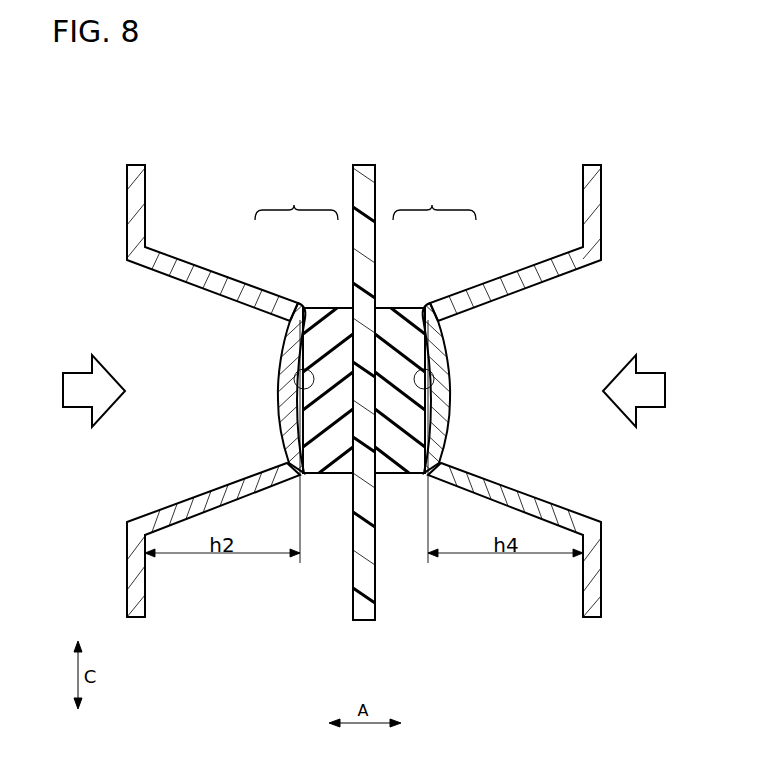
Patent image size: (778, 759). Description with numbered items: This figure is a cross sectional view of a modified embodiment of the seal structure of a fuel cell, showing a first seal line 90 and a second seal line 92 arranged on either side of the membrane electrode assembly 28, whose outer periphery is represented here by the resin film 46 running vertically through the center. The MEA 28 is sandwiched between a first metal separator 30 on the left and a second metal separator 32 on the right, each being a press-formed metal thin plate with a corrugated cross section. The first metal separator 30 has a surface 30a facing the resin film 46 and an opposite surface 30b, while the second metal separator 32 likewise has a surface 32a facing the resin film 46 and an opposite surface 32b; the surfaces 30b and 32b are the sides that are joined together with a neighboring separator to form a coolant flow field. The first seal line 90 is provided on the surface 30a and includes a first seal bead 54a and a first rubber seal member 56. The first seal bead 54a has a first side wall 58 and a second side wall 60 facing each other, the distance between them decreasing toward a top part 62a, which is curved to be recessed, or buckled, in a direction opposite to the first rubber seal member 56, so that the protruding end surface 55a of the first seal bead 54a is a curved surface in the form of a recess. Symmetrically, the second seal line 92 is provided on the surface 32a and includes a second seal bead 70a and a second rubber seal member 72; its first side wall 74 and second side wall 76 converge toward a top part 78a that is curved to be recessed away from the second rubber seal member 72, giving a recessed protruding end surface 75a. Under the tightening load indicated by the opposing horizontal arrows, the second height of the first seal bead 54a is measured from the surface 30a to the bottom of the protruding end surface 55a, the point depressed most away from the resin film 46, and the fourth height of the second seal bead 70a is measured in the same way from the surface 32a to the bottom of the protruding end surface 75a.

The membrane electrode assembly 28 is at (376, 166).
The resin film 46 is at (364, 163).
The first metal separator 30 is at (135, 164).
The surface of the first metal separator 30a is at (146, 188).
The surface of the first metal separator 30b is at (127, 190).
The second metal separator 32 is at (593, 164).
The surface of the second metal separator 32a is at (582, 188).
The surface of the second metal separator 32b is at (601, 190).
The first side wall 58 is at (203, 283).
The second side wall 60 is at (215, 497).
The first side wall 74 is at (525, 283).
The second side wall 76 is at (513, 497).
The first seal bead 54a is at (261, 291).
The second seal bead 70a is at (467, 291).
The first rubber seal member 56 is at (332, 332).
The second rubber seal member 72 is at (397, 332).
The protruding end surface of the first seal bead 55a is at (291, 351).
The protruding end surface of the second seal bead 75a is at (437, 351).
The top part of the first seal bead 62a is at (289, 398).
The top part of the second seal bead 78a is at (439, 398).
The first seal line 90 is at (296, 203).
The second seal line 92 is at (434, 203).